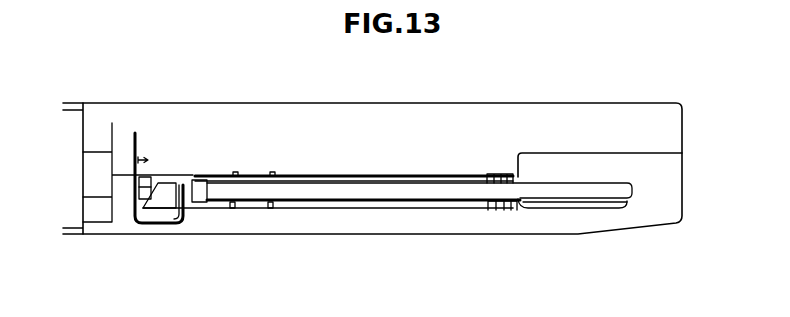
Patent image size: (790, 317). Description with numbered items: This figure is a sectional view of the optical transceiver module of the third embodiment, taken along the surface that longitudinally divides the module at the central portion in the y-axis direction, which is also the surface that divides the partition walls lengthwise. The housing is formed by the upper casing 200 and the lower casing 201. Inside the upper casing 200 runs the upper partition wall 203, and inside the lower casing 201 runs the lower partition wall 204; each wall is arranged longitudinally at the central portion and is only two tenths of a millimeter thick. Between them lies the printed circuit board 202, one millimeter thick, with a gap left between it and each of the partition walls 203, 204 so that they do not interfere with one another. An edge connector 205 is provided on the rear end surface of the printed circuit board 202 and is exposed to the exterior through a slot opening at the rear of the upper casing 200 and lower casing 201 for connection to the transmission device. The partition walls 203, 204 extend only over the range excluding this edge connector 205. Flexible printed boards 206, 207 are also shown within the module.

The upper casing 200 is at (585, 103).
The lower casing 201 is at (517, 212).
The printed circuit board 202 is at (312, 195).
The upper partition wall 203 is at (392, 172).
The lower partition wall 204 is at (390, 210).
The edge connector 205 is at (577, 212).
The flexible printed board 206 is at (170, 187).
The flexible printed board 207 is at (167, 223).